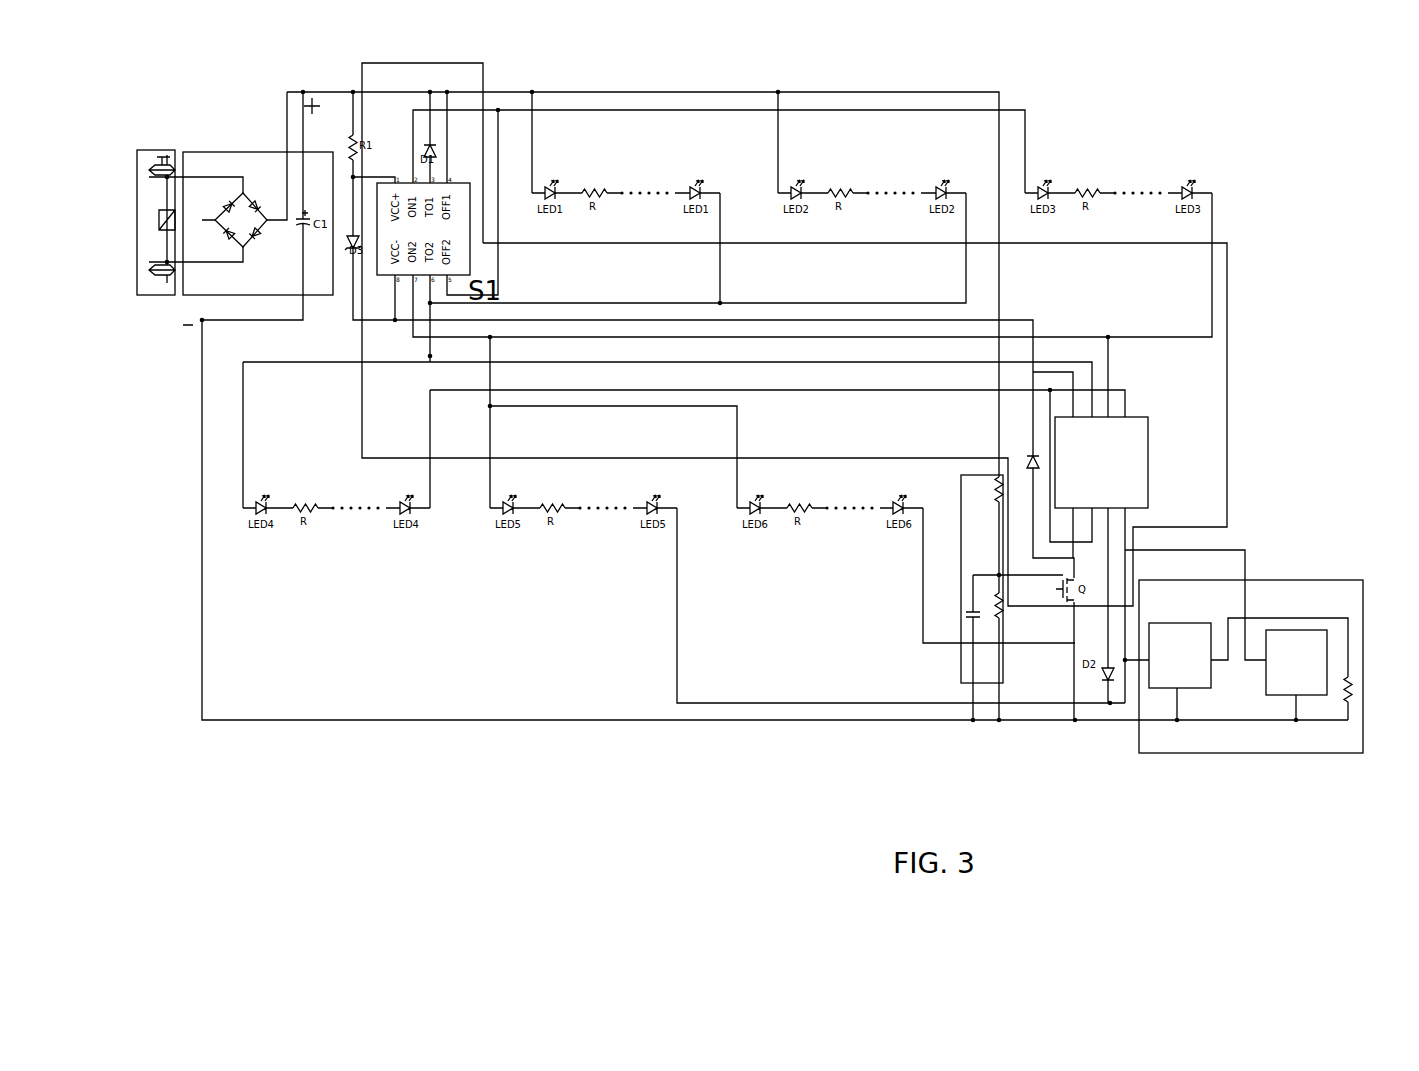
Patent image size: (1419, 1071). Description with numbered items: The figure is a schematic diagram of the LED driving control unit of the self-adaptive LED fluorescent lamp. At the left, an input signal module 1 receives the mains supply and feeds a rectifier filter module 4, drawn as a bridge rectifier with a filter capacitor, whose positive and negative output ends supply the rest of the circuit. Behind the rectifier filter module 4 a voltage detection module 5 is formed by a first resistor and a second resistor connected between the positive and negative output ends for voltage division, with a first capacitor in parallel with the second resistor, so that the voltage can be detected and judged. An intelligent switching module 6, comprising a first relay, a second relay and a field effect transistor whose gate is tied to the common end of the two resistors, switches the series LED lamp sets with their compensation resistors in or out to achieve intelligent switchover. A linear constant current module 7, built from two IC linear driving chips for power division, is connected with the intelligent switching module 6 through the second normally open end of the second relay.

The input signal module 1 is at (143, 174).
The rectifier filter module 4 is at (203, 162).
The voltage detection module 5 is at (966, 662).
The intelligent switching module 6 is at (1213, 418).
The linear constant current module 7 is at (1340, 592).